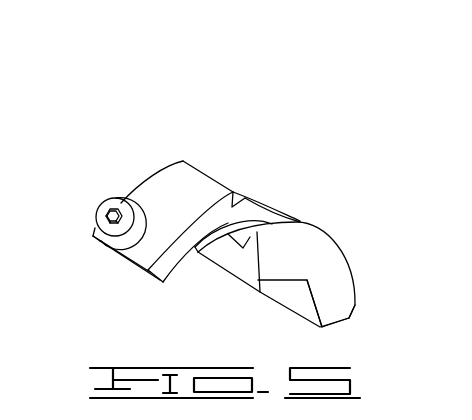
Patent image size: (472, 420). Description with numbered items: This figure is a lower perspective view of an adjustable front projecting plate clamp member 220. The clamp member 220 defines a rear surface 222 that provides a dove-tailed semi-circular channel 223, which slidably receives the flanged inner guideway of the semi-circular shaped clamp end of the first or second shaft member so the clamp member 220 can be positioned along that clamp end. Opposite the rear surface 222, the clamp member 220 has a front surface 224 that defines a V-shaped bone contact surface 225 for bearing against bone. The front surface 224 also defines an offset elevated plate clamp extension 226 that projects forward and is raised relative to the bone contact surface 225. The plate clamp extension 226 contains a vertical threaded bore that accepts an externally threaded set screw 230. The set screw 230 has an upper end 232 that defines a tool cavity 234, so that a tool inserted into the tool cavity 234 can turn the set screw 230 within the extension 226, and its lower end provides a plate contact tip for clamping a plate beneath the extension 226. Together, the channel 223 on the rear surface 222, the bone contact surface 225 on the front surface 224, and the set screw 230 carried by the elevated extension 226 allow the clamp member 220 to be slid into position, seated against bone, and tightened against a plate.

The adjustable front projecting plate clamp member 220 is at (272, 179).
The rear surface 222 is at (297, 226).
The dove-tailed semi-circular channel 223 is at (236, 234).
The front surface 224 is at (315, 300).
The V-shaped bone contact surface 225 is at (296, 303).
The offset elevated plate clamp extension 226 is at (175, 180).
The externally threaded set screw 230 is at (125, 237).
The upper end 232 is at (121, 198).
The tool cavity 234 is at (110, 210).